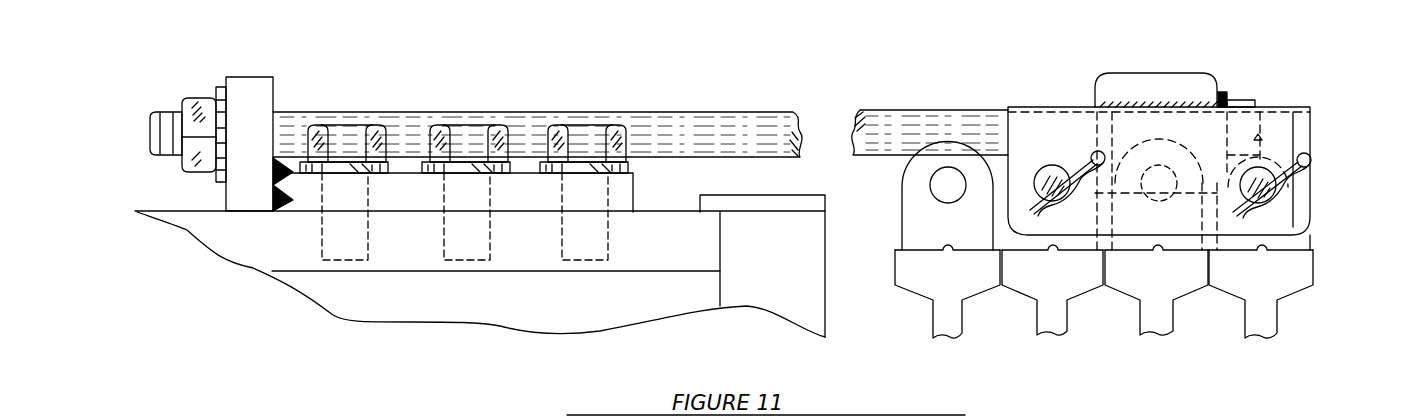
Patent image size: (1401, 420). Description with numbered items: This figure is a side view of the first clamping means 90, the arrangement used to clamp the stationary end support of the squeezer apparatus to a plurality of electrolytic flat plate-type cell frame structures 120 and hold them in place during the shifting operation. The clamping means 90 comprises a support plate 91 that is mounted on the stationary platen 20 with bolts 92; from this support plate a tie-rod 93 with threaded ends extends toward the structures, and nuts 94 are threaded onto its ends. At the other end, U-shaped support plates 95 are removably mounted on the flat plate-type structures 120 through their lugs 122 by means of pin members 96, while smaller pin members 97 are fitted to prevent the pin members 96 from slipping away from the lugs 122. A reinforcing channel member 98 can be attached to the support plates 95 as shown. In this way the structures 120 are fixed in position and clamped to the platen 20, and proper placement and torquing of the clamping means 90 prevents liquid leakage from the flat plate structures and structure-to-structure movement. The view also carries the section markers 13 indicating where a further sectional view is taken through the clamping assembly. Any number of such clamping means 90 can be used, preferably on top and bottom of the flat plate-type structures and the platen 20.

The platen 20 is at (676, 247).
The first clamping means 90 is at (400, 336).
The support plate 91 is at (238, 77).
The bolts 92 is at (387, 142).
The tie-rod 93 is at (826, 80).
The nuts 94 is at (185, 170).
The U-shaped support plates 95 is at (1293, 107).
The pin members 96 is at (1040, 173).
The smaller pin members 97 is at (1065, 150).
The reinforcing channel member 98 is at (1160, 73).
The flat plate-type structures 120 is at (1035, 310).
The lugs 122 is at (893, 203).
The section line 13- 13 is at (1357, 97).